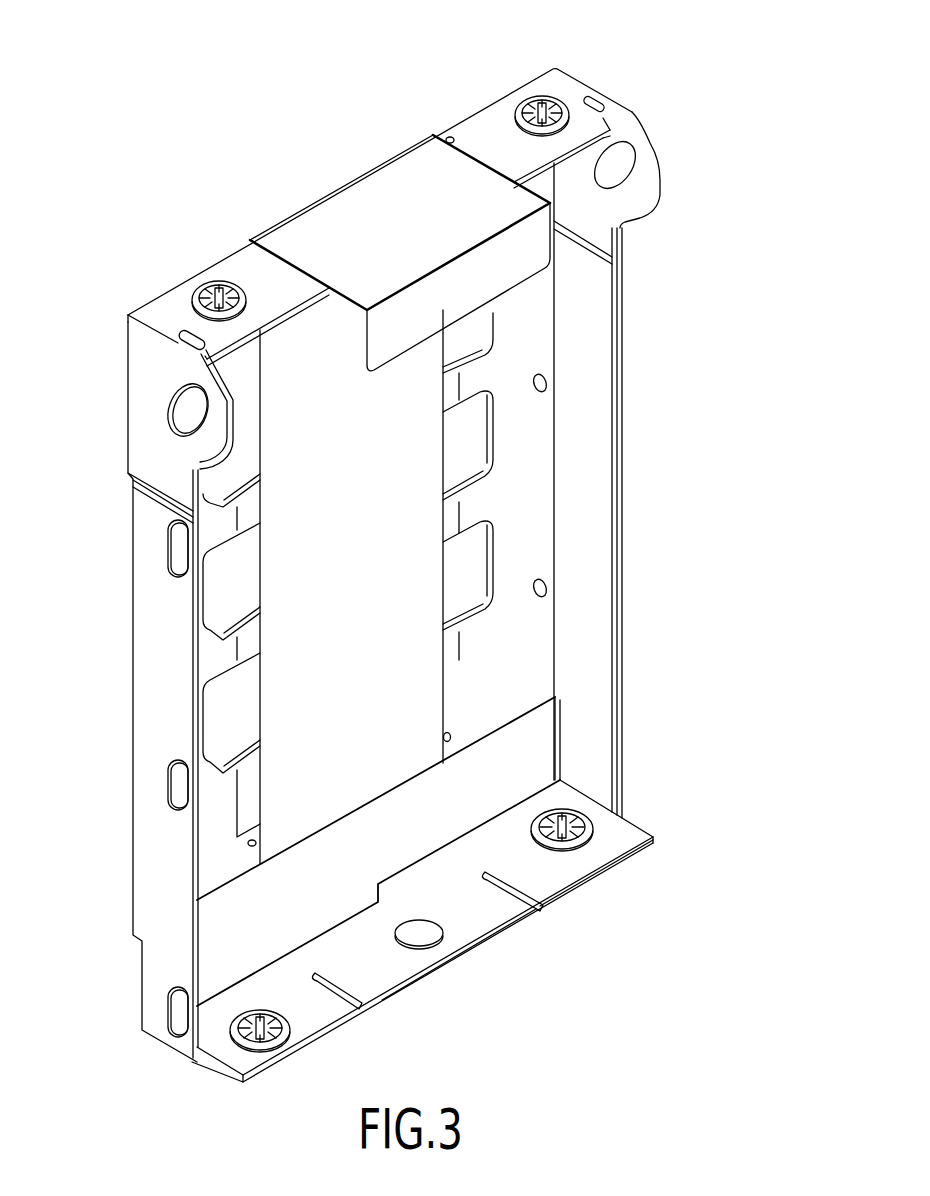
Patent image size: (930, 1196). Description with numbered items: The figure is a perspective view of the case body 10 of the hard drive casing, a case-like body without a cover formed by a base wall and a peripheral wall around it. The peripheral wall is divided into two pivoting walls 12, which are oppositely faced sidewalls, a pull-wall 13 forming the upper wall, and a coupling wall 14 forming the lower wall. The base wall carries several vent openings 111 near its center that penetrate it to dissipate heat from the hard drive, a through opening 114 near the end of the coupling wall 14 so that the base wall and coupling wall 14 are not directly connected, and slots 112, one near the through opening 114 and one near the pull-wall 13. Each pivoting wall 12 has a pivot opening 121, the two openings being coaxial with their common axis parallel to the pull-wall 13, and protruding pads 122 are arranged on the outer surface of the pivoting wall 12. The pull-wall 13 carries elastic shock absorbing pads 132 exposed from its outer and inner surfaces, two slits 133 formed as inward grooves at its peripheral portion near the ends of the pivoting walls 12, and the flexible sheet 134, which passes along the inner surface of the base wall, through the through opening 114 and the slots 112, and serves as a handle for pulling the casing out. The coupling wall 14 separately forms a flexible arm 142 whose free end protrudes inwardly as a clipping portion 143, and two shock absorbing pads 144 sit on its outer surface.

The case body 10 is at (230, 138).
The pivoting wall 12 is at (621, 540).
The pull-wall 13 is at (243, 270).
The coupling wall 14 is at (490, 972).
The vent opening 111 is at (450, 137).
The slot 112 is at (450, 737).
The through opening 114 is at (530, 765).
The pivot opening 121 is at (180, 417).
The protruding pad 122 is at (175, 547).
The shock absorbing pad 132 is at (547, 100).
The slit 133 is at (608, 100).
The flexible sheet 134 is at (377, 185).
The flexible arm 142 is at (487, 905).
The clipping portion 143 is at (503, 935).
The shock absorbing pad 144 is at (592, 827).